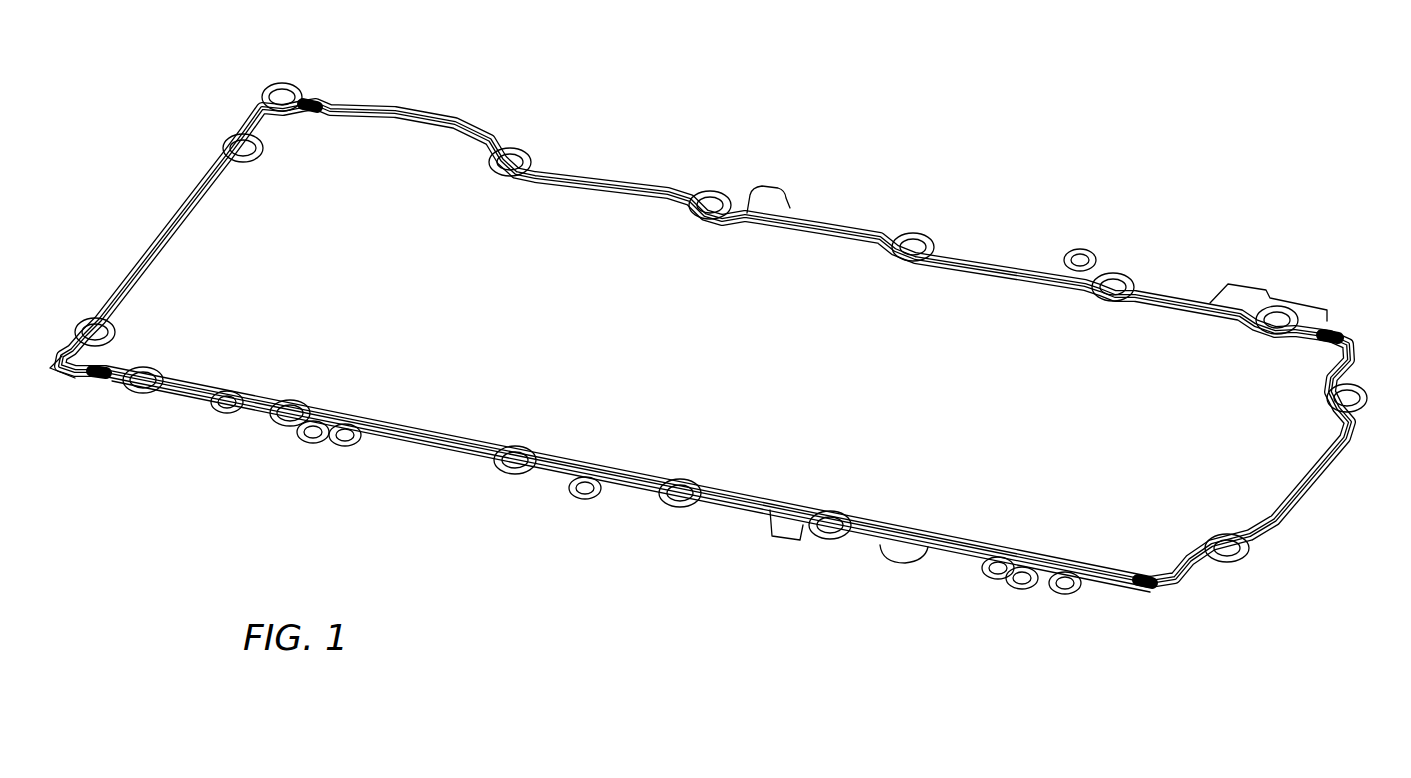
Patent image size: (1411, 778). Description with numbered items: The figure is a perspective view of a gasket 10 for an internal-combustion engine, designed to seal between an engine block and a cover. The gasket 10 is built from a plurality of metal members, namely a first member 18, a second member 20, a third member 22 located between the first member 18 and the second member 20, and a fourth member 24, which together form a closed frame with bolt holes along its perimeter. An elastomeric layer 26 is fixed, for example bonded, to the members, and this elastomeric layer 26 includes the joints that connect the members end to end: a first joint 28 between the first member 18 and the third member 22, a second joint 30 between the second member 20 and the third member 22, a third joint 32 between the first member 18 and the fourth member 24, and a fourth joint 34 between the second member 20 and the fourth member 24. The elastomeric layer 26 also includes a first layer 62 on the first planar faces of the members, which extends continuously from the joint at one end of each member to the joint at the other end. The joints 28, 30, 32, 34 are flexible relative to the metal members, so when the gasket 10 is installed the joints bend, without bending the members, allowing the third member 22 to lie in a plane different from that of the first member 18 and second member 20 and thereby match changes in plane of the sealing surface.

The gasket 10 is at (1040, 79).
The first member 18 is at (578, 496).
The second member 20 is at (780, 186).
The third member 22 is at (186, 196).
The fourth member 24 is at (1313, 497).
The elastomeric layer 26 is at (1233, 305).
The first joint 28 is at (97, 376).
The second joint 30 is at (313, 100).
The third joint 32 is at (1143, 590).
The fourth joint 34 is at (1338, 328).
The first layer 62 is at (920, 555).